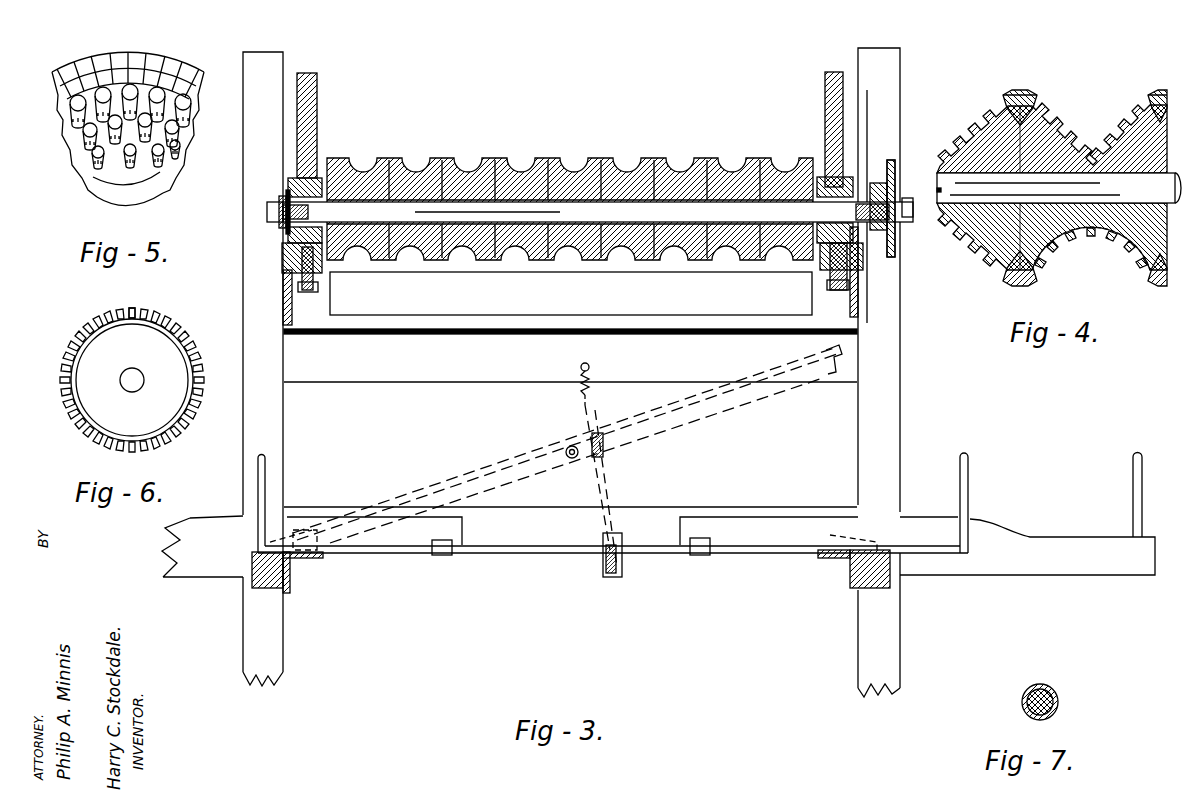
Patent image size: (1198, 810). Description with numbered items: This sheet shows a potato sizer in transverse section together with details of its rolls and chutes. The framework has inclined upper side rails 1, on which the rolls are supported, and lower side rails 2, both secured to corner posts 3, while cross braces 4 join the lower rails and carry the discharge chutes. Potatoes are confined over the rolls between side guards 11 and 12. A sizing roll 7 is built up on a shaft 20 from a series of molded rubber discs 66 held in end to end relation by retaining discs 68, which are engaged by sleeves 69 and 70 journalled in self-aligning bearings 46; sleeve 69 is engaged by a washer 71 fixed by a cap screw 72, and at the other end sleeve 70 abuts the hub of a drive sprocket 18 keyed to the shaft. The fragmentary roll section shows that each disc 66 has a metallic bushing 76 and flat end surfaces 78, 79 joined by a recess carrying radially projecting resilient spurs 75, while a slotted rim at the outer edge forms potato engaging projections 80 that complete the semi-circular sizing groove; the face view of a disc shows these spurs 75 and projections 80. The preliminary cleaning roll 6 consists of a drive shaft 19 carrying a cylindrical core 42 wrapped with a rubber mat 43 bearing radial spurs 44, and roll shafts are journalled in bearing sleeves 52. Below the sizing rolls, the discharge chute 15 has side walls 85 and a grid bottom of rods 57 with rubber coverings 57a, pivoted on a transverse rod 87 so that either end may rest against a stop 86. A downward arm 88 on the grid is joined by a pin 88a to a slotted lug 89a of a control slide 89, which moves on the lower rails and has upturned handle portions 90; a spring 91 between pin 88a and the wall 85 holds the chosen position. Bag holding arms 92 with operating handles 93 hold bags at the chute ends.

In FIG. 3, the upper side rail 1 is at (287, 292).
In FIG. 3, the lower side rail 2 is at (291, 578).
In FIG. 3, the corner post 3 is at (250, 640).
In FIG. 3, the cross brace 4 is at (650, 514).
In FIG. 6, the preliminary cleaning roll 6 is at (62, 440).
In FIG. 3, the sizing roll 7 is at (637, 143).
In FIG. 3, the side guard 11 is at (828, 72).
In FIG. 3, the side guard 12 is at (310, 74).
In FIG. 3, the discharge chute 15 is at (708, 388).
In FIG. 3, the drive sprocket 18 is at (897, 250).
In FIG. 6, the drive shaft 19 is at (121, 372).
In FIG. 3, the shaft 20 is at (499, 200).
In FIG. 4, the shaft 20 is at (940, 172).
In FIG. 6, the cylindrical core 42 is at (160, 414).
In FIG. 6, the mat 43 is at (120, 316).
In FIG. 6, the spurs 44 is at (142, 315).
In FIG. 3, the self-aligning bearing 46 is at (295, 262).
In FIG. 3, the bearing sleeve 52 is at (284, 193).
In FIG. 7, the rod 57 is at (1054, 685).
In FIG. 7, the resilient rubber covering 57a is at (1058, 700).
In FIG. 3, the disc 66 is at (682, 160).
In FIG. 4, the disc 66 is at (1061, 105).
In FIG. 5, the disc 66 is at (66, 179).
In FIG. 3, the retaining disc 68 is at (325, 178).
In FIG. 3, the sleeve 69 is at (310, 206).
In FIG. 3, the sleeve 70 is at (870, 200).
In FIG. 3, the washer 71 is at (280, 198).
In FIG. 3, the cap screw 72 is at (272, 216).
In FIG. 4, the spurs 75 is at (1150, 258).
In FIG. 5, the spurs 75 is at (80, 137).
In FIG. 3, the metallic bushing 76 is at (738, 204).
In FIG. 4, the metallic bushing 76 is at (1142, 174).
In FIG. 4, the end surface 78 is at (1020, 92).
In FIG. 4, the end surface 79 is at (1093, 160).
In FIG. 4, the potato engaging projections 80 is at (1150, 92).
In FIG. 5, the potato engaging projections 80 is at (160, 60).
In FIG. 3, the side wall 85 is at (586, 305).
In FIG. 3, the stop 86 is at (265, 531).
In FIG. 3, the transverse rod 87 is at (564, 448).
In FIG. 3, the arm 88 is at (598, 560).
In FIG. 3, the pin 88a is at (612, 580).
In FIG. 3, the control slide 89 is at (660, 553).
In FIG. 3, the slotted lug 89a is at (630, 572).
In FIG. 3, the handle portion 90 is at (268, 466).
In FIG. 3, the spring 91 is at (609, 377).
In FIG. 3, the bag holding arm 92 is at (192, 570).
In FIG. 3, the operating handle 93 is at (1131, 475).